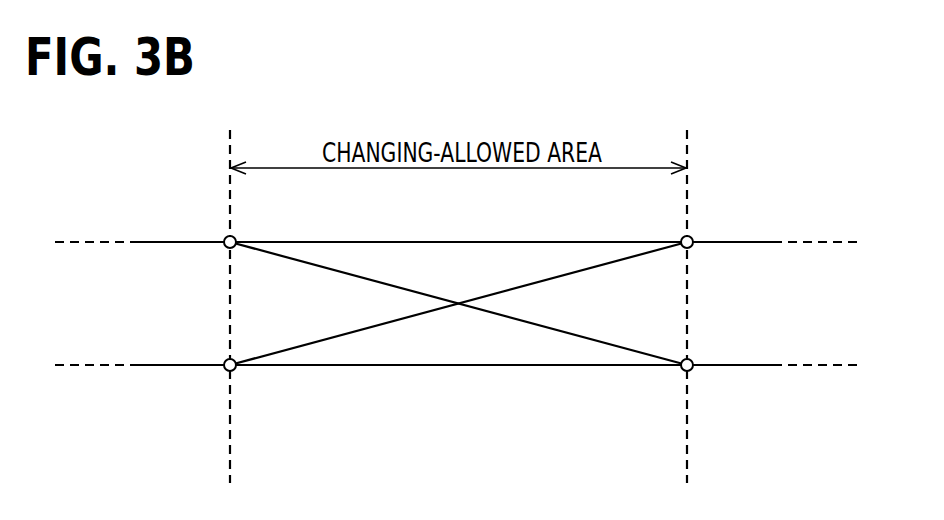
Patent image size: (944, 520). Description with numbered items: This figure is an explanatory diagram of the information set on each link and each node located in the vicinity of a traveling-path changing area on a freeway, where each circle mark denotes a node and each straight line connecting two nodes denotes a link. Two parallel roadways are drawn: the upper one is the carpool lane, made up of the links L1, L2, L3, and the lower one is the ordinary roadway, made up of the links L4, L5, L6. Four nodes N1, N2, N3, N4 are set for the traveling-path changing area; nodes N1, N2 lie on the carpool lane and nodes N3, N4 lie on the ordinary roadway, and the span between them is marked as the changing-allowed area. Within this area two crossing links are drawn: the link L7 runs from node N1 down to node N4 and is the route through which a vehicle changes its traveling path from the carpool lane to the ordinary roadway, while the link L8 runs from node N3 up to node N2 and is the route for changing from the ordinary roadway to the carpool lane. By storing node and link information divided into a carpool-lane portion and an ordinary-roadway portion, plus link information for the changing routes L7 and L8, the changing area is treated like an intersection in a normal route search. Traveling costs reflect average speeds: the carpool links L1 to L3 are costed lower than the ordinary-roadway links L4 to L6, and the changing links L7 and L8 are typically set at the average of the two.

The link L1 is at (173, 242).
The link L2 is at (363, 242).
The link L3 is at (745, 242).
The link L4 is at (175, 365).
The link L5 is at (362, 365).
The link L6 is at (743, 365).
The link L7 is at (505, 317).
The link L8 is at (507, 290).
The node N1 is at (226, 238).
The node N2 is at (691, 238).
The node N3 is at (226, 369).
The node N4 is at (692, 369).